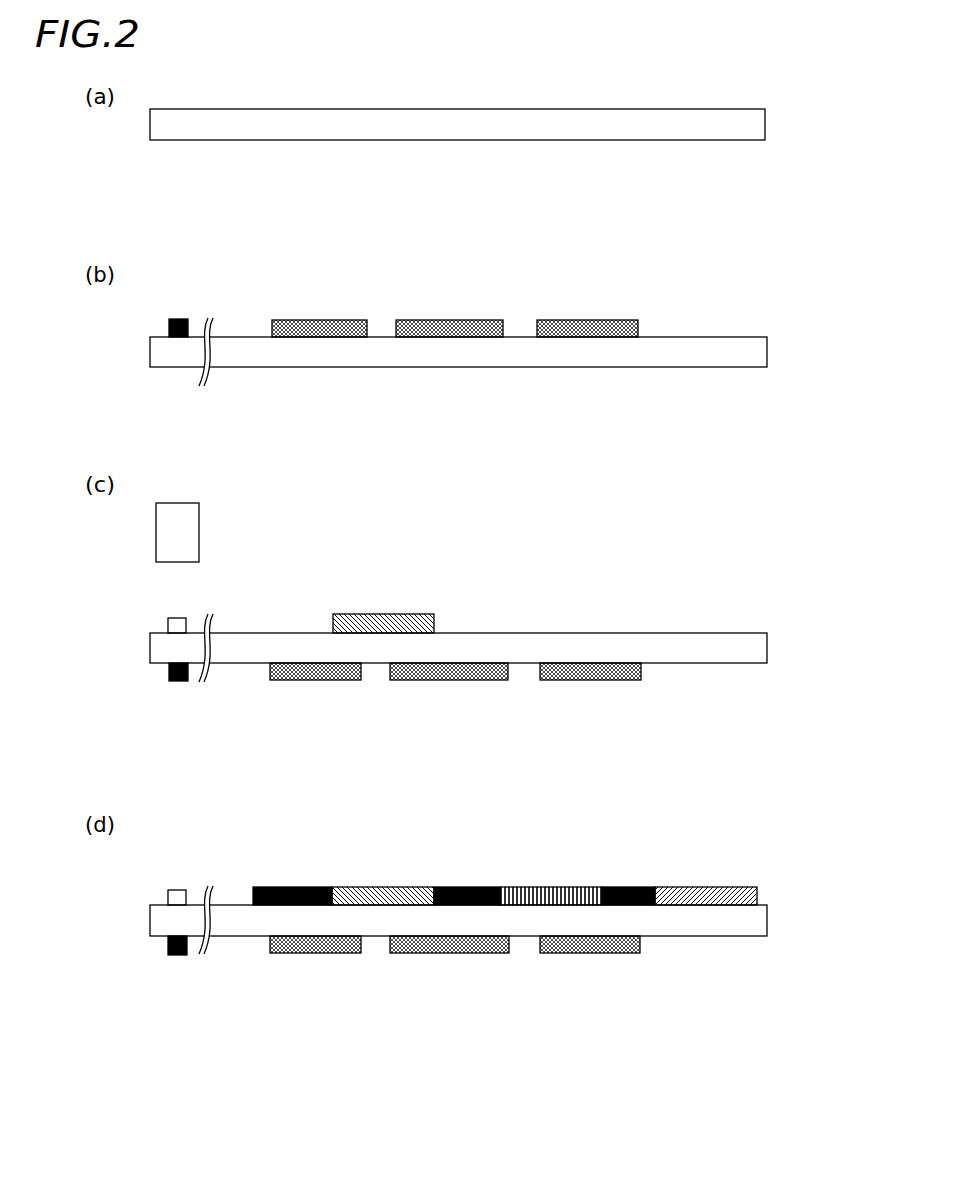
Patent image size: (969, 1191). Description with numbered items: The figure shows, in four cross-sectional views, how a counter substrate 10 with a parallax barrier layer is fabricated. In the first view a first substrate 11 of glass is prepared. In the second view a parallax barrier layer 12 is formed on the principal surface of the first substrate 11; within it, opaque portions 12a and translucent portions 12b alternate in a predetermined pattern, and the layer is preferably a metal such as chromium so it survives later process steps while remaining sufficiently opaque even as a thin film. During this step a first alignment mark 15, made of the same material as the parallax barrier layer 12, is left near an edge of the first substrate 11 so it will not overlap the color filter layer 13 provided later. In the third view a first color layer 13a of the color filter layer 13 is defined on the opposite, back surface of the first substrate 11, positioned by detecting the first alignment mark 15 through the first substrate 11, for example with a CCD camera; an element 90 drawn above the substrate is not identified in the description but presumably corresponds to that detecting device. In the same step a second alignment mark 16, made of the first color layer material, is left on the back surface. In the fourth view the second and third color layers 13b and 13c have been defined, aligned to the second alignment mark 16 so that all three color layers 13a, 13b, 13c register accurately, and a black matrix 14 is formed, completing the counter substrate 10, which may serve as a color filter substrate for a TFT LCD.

The counter substrate 10 is at (778, 843).
The first substrate 11 is at (766, 126).
The parallax barrier layer 12 is at (627, 238).
The opaque portions 12a is at (473, 325).
The translucent portions 12b is at (527, 327).
The color filter layer 13 is at (683, 826).
The first color layer 13a is at (366, 616).
The second color layer 13b is at (523, 888).
The third color layer 13c is at (697, 888).
The black matrix 14 is at (293, 887).
The first alignment mark 15 is at (169, 327).
The second alignment mark 16 is at (169, 622).
The coating head 90 is at (197, 550).